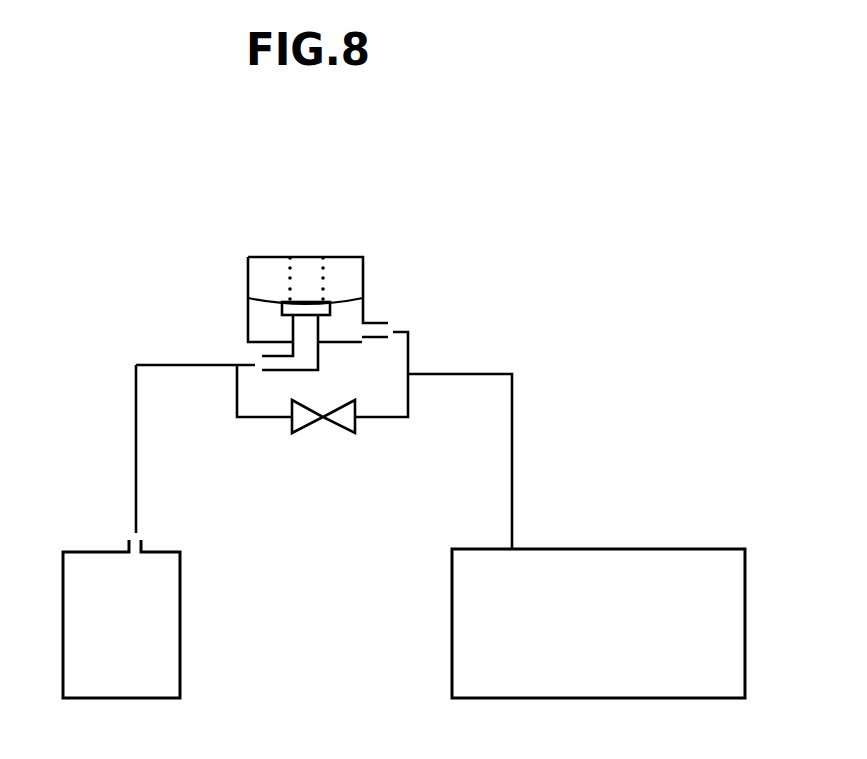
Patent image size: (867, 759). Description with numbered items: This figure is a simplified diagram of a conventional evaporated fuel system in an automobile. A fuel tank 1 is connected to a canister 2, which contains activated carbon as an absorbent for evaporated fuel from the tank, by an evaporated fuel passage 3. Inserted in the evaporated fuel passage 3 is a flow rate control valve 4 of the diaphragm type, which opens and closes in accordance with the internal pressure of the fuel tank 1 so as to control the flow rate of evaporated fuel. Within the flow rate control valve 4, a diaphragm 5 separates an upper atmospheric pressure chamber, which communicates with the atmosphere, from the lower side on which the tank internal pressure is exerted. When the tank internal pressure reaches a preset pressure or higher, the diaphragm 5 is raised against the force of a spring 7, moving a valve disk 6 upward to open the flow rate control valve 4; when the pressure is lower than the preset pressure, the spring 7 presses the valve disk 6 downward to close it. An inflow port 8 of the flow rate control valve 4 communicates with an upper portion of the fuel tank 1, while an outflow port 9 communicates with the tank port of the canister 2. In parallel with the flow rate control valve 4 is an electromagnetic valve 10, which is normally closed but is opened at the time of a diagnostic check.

The fuel tank 1 is at (636, 549).
The canister 2 is at (180, 636).
The evaporated fuel passage 3 is at (512, 428).
The flow rate control valve 4 is at (343, 257).
The diaphragm 5 is at (345, 298).
The valve disk 6 is at (283, 303).
The spring 7 is at (282, 268).
The inflow port 8 is at (384, 318).
The outflow port 9 is at (263, 356).
The electromagnetic valve 10 is at (323, 418).